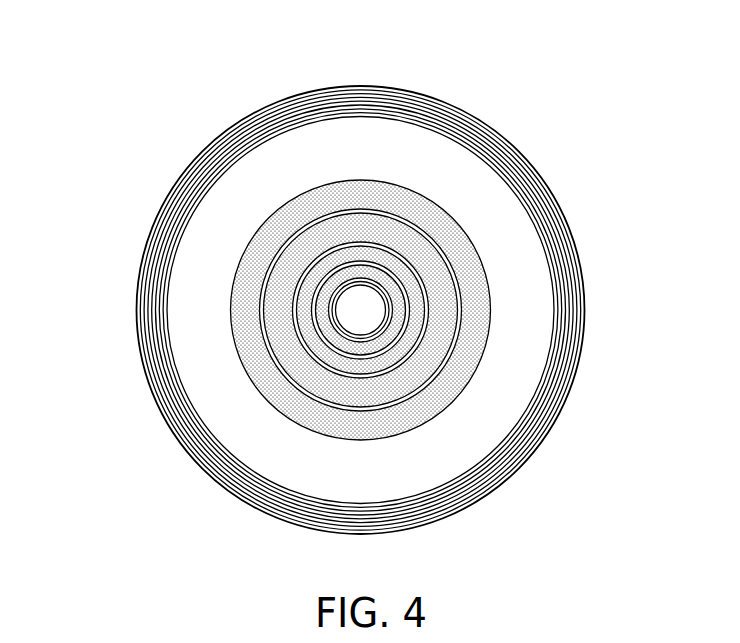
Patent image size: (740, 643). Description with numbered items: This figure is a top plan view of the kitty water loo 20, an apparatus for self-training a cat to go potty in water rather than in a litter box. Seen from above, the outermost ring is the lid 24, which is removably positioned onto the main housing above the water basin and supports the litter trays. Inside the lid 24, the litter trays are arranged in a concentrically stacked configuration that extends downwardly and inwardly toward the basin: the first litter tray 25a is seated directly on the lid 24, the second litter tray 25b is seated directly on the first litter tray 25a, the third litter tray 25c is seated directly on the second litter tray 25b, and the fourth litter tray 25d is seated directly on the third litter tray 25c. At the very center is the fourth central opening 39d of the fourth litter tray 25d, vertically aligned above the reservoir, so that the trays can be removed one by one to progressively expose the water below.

The kitty water loo 20 is at (178, 138).
The lid 24 is at (465, 443).
The first litter tray 25a is at (395, 193).
The second litter tray 25b is at (435, 283).
The third litter tray 25c is at (303, 312).
The fourth litter tray 25d is at (335, 329).
The fourth central opening 39d is at (370, 318).